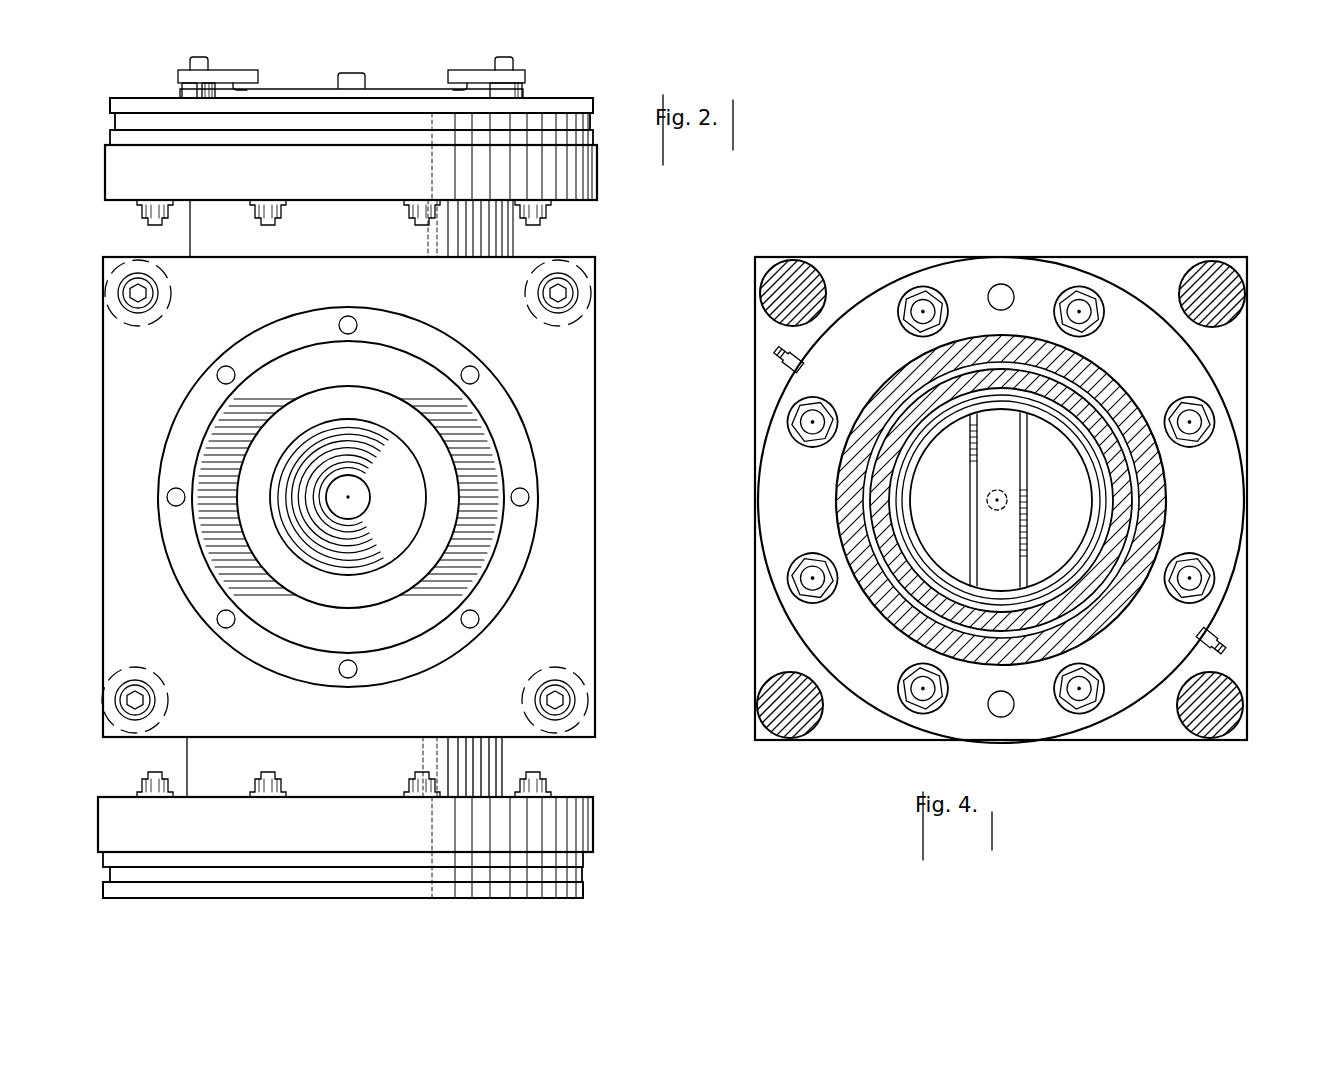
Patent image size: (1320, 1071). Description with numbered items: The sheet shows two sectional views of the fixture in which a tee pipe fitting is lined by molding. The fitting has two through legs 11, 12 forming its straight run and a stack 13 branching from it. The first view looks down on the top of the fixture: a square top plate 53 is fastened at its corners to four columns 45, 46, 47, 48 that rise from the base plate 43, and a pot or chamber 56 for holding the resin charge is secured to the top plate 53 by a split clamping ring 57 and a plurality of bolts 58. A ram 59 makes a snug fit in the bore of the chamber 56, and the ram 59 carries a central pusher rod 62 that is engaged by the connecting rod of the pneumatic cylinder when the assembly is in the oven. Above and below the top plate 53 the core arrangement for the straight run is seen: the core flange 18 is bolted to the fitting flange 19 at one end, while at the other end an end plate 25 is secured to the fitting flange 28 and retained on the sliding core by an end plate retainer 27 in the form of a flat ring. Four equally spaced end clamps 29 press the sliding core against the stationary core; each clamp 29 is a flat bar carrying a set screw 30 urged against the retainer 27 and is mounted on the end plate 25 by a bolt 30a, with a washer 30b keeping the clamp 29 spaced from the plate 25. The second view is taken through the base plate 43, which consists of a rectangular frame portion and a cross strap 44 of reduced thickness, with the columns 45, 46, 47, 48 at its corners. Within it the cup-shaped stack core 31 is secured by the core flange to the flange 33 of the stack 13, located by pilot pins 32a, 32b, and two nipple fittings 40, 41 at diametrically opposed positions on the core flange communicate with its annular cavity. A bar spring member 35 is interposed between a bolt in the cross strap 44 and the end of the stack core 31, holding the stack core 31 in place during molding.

In FIG. 2, the through leg 11 is at (510, 750).
In FIG. 2, the through leg 12 is at (512, 248).
In FIG. 4, the stack 13 is at (1168, 532).
In FIG. 2, the flange 18 is at (584, 887).
In FIG. 2, the flange 19 is at (594, 822).
In FIG. 2, the end plate 25 is at (595, 140).
In FIG. 2, the end plate retainer 27 is at (392, 92).
In FIG. 2, the flange 28 is at (596, 182).
In FIG. 2, the end clamp 29 is at (231, 72).
In FIG. 2, the set screw 30 is at (244, 86).
In FIG. 2, the bolt 30a is at (190, 62).
In FIG. 2, the washer 30b is at (183, 93).
In FIG. 4, the stack core 31 is at (1160, 502).
In FIG. 4, the pilot pin 32a is at (1006, 712).
In FIG. 4, the pilot pin 32b is at (1013, 294).
In FIG. 4, the flange 33 is at (1228, 570).
In FIG. 4, the bar spring member 35 is at (1003, 468).
In FIG. 4, the nipple fitting 40 is at (782, 362).
In FIG. 4, the nipple fitting 41 is at (1230, 643).
In FIG. 4, the base plate 43 is at (1237, 358).
In FIG. 4, the cross strap 44 is at (1025, 533).
In FIG. 4, the column 45 is at (780, 705).
In FIG. 4, the column 46 is at (778, 300).
In FIG. 4, the column 47 is at (1242, 300).
In FIG. 4, the column 48 is at (1230, 713).
In FIG. 2, the top plate 53 is at (580, 558).
In FIG. 2, the chamber 56 is at (475, 425).
In FIG. 2, the split clamping ring 57 is at (519, 433).
In FIG. 2, the bolt 58 is at (526, 494).
In FIG. 2, the ram 59 is at (450, 490).
In FIG. 2, the pusher rod 62 is at (370, 500).